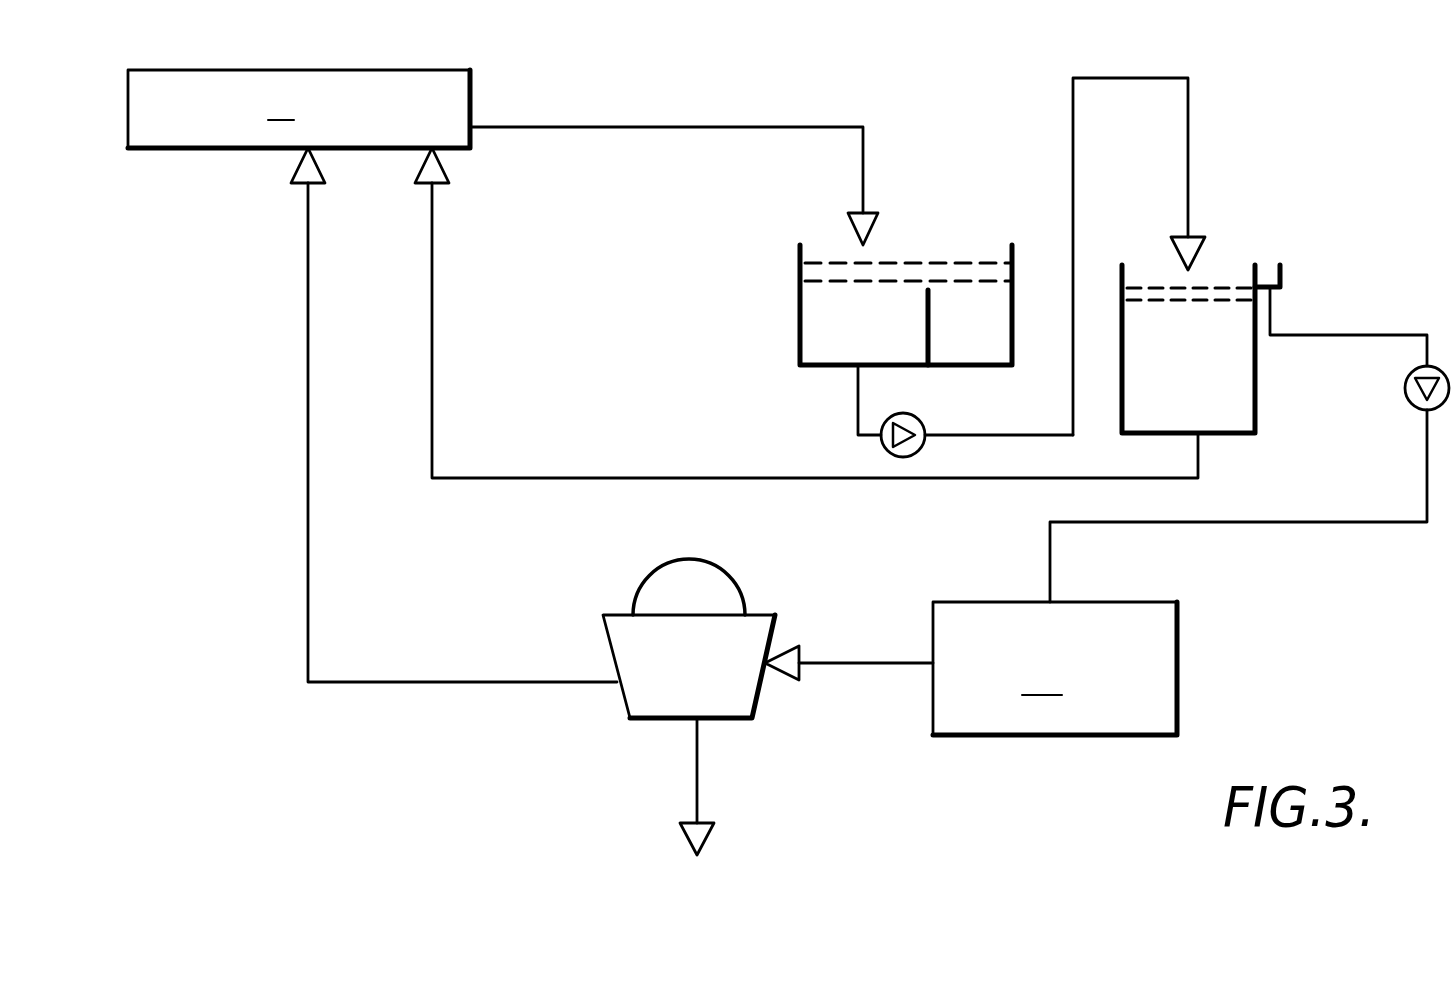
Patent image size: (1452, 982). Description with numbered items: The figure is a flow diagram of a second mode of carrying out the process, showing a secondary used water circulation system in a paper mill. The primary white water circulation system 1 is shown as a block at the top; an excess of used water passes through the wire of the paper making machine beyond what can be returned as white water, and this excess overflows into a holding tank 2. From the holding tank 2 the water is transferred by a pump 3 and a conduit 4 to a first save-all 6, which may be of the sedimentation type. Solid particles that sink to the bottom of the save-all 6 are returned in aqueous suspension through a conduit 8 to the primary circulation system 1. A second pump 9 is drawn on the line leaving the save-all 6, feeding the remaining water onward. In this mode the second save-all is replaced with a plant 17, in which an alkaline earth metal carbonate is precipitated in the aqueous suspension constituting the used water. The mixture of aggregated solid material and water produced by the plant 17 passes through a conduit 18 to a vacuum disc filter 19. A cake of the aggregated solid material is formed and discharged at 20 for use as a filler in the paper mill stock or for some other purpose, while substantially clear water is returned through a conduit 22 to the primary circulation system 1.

The primary white water circulation system 1 is at (299, 109).
The holding tank 2 is at (800, 318).
The pump 3 is at (922, 422).
The conduit 4 is at (1073, 162).
The first save-all 6 is at (1257, 395).
The conduit 8 is at (608, 478).
The pump 9 is at (1407, 407).
The plant 17 is at (1055, 668).
The conduit 18 is at (878, 662).
The vacuum disc filter 19 is at (743, 592).
The cake discharge 20 is at (698, 760).
The conduit 22 is at (308, 597).